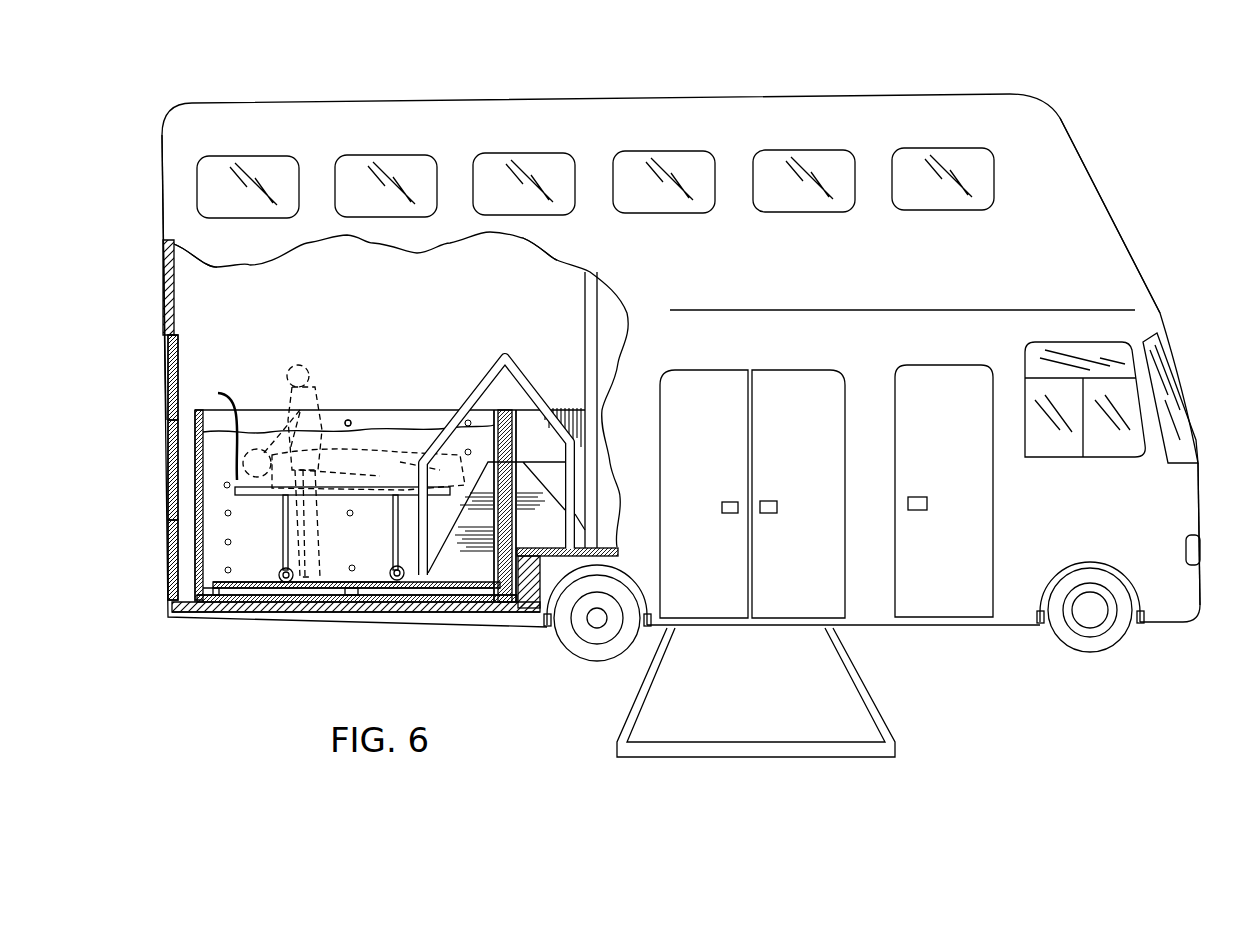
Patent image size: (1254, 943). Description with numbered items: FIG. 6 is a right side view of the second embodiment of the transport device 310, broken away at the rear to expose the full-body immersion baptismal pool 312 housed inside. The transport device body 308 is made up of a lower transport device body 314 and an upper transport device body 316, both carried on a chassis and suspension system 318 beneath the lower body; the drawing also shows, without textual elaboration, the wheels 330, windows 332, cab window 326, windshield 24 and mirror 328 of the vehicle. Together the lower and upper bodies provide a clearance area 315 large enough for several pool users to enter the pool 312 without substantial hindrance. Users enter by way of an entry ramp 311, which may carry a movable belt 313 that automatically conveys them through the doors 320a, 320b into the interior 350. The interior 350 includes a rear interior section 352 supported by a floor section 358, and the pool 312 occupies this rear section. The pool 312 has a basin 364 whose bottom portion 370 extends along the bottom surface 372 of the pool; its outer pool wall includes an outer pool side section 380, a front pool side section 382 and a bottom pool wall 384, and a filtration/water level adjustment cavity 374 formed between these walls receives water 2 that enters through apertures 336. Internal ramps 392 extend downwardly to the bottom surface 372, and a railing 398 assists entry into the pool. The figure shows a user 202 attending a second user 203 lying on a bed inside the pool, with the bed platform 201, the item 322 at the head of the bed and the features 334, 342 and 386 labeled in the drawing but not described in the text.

The transport device 310 is at (1103, 88).
The transport device body 308 is at (162, 180).
The upper transport device body 316 is at (1107, 207).
The windows 332 is at (262, 162).
The cab side window 326 is at (1088, 345).
The windshield 24 is at (1173, 375).
The lower transport device body 314 is at (1203, 525).
The mirror 328 is at (1200, 550).
The wheel 330 is at (578, 653).
The chassis and suspension system 318 is at (650, 612).
The door 320a is at (704, 398).
The door 320b is at (798, 398).
The entry ramp 311 is at (791, 692).
The movable belt 313 is at (773, 702).
The clearance area 315 is at (228, 303).
The wall panel 342 is at (170, 405).
The wall section 334 is at (172, 497).
The apertures 336 is at (196, 525).
The basin 364 is at (173, 575).
The full-body immersion baptismal pool 312 is at (406, 390).
The outer pool side section 380 is at (215, 617).
The bottom pool wall 384 is at (256, 600).
The filtration/water level adjustment cavity 374 is at (320, 612).
The floor section 358 is at (425, 613).
The interior 350 is at (275, 304).
The rear interior section 352 is at (508, 297).
The user 202 is at (297, 365).
The water 2 is at (255, 430).
The curtain 322 is at (212, 428).
The fastener 386 is at (355, 425).
The railing 398 is at (468, 395).
The front pool side section 382 is at (518, 470).
The stretcher platform 201 is at (280, 495).
The user 203 is at (372, 495).
The bottom portion 370 is at (258, 583).
The bottom surface 372 is at (368, 582).
The internal ramps 392 is at (462, 576).